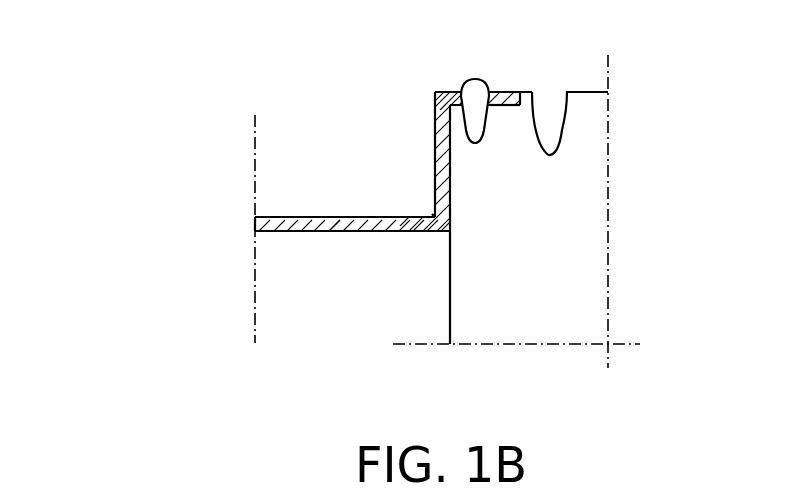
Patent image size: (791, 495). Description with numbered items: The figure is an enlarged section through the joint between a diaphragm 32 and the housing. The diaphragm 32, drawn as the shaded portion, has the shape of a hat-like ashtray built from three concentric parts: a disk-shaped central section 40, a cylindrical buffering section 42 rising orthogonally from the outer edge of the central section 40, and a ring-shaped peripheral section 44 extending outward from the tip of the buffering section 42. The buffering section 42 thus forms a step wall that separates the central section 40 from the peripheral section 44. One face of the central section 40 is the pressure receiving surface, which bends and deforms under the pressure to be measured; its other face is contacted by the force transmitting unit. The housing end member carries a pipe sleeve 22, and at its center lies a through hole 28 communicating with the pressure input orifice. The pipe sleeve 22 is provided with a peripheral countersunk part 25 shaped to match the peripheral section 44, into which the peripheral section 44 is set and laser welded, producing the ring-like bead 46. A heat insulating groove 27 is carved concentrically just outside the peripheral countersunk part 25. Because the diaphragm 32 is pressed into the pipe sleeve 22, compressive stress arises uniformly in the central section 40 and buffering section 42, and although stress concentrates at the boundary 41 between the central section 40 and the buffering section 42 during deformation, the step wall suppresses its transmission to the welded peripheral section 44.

The pipe sleeve 22 is at (587, 201).
The peripheral countersunk part 25 is at (503, 106).
The heat insulating groove 27 is at (550, 110).
The through hole 28 is at (378, 309).
The diaphragm 32 is at (315, 217).
The central section (diaphragm body) 40 is at (297, 232).
The boundary 41 is at (434, 216).
The buffering section (cylinder section) 42 is at (435, 150).
The peripheral section (flange) 44 is at (511, 91).
The bead 46 is at (473, 78).